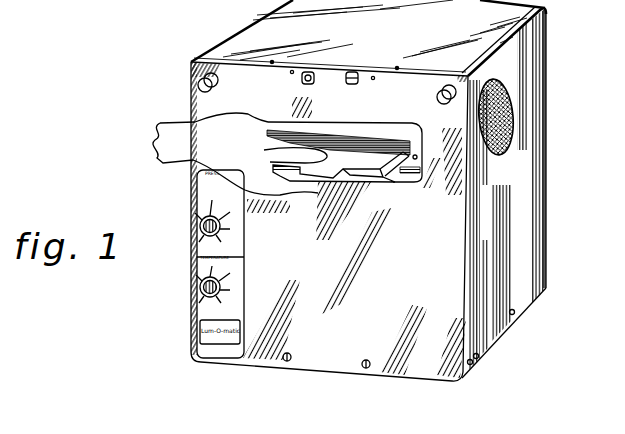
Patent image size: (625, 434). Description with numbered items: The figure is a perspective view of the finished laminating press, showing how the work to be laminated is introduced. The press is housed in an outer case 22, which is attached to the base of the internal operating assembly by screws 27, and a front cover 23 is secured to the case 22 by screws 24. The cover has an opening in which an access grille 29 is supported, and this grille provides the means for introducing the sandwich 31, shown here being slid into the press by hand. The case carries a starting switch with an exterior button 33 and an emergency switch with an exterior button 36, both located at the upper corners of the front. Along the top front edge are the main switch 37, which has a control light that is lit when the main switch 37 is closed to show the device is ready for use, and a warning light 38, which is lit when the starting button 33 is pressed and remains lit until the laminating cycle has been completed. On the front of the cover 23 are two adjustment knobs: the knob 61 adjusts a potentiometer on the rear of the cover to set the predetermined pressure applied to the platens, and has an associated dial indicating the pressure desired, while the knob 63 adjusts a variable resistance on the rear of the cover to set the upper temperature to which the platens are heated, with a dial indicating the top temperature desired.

The outer case 22 is at (500, 338).
The front cover 23 is at (455, 381).
The screws 24 is at (470, 166).
The screws 27 is at (512, 313).
The access grille 29 is at (400, 128).
The sandwich 31 is at (350, 172).
The exterior button 33 is at (445, 90).
The exterior button 36 is at (200, 70).
The main switch 37 is at (350, 76).
The warning light 38 is at (310, 72).
The knob 61 is at (203, 224).
The knob 63 is at (203, 287).